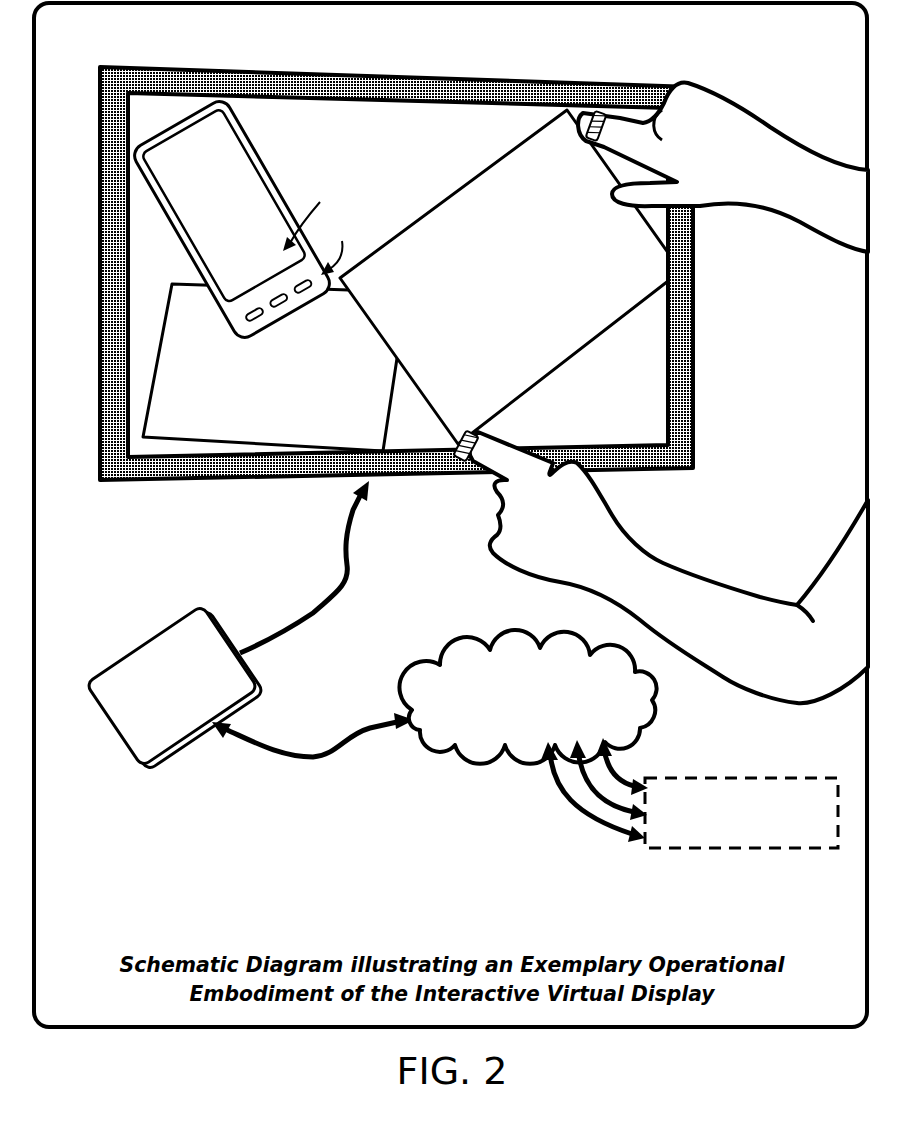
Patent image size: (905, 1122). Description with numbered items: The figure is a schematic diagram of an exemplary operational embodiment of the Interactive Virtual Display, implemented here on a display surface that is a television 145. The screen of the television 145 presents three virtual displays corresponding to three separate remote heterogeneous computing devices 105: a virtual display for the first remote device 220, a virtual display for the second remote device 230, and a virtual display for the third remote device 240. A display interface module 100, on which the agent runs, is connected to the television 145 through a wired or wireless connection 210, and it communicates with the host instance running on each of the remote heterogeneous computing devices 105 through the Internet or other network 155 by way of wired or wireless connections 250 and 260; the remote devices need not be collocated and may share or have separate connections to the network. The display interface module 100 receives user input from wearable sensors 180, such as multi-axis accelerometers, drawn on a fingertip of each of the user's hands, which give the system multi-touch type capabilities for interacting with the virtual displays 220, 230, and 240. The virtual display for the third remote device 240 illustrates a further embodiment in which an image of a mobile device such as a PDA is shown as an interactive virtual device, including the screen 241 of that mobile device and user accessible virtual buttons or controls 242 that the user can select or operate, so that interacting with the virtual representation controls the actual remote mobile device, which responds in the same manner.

The display interface module 100 is at (173, 623).
The remote heterogeneous computing devices 105 is at (757, 778).
The television 145 is at (452, 78).
The Internet or other network 155 is at (528, 650).
The wearable sensors 180 is at (576, 128).
The wired or wireless connection 210 is at (350, 578).
The virtual display for remote device #1 220 is at (443, 200).
The virtual display for remote device #2 230 is at (167, 313).
The virtual display for remote device #3 240 is at (272, 150).
The screen 241 is at (313, 215).
The virtual buttons or controls 242 is at (341, 248).
The wired or wireless connection 250 is at (280, 748).
The wired or wireless connections 260 is at (553, 782).